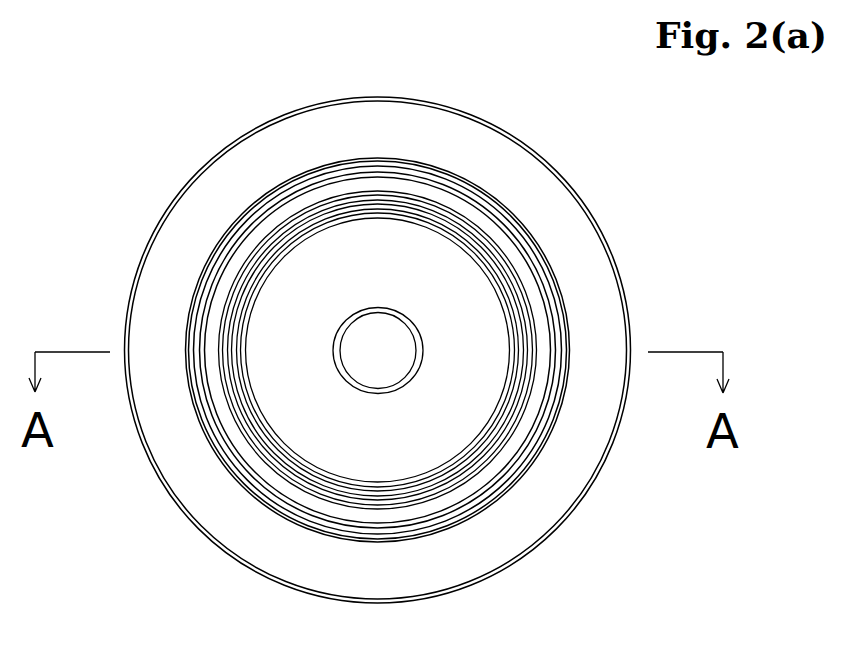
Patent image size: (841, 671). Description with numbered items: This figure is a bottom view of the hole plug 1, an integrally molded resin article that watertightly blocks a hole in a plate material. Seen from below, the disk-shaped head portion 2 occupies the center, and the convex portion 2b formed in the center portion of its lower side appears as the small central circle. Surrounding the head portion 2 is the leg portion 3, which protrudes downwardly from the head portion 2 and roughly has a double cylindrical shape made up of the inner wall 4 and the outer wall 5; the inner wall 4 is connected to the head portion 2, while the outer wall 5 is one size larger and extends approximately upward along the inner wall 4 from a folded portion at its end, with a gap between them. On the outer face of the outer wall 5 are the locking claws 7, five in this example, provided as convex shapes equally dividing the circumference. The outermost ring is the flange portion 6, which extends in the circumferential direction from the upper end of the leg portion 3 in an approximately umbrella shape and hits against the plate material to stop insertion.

The hole plug 1 is at (588, 144).
The head portion 2 is at (490, 272).
The convex portion 2b is at (370, 352).
The leg portion 3 is at (457, 350).
The inner wall 4 is at (483, 290).
The outer wall 5 is at (478, 298).
The flange portion 6 is at (242, 160).
The locking claws 7 is at (430, 180).